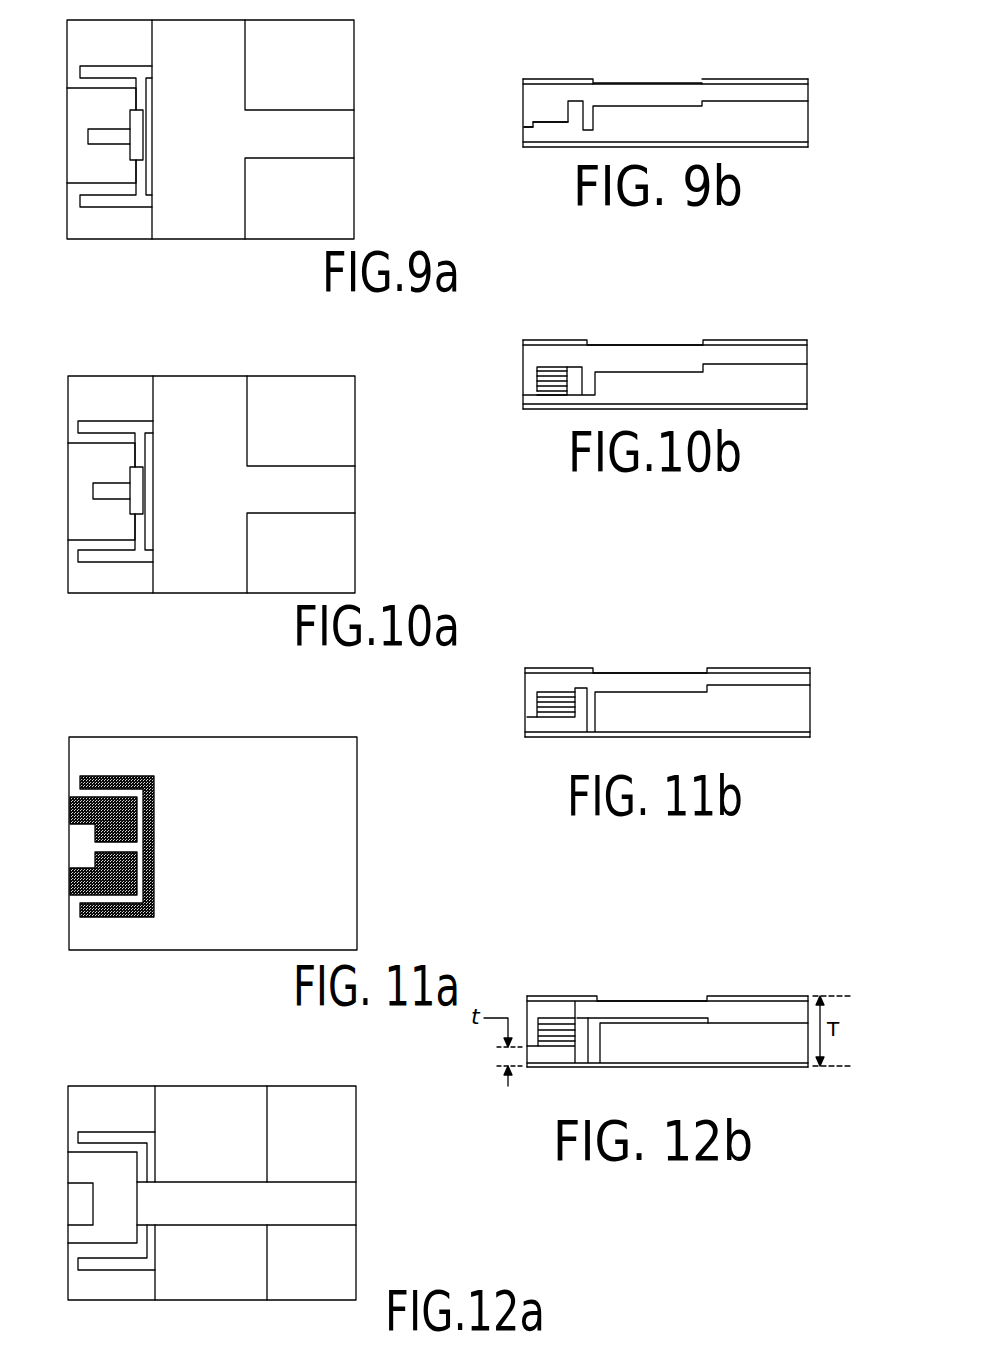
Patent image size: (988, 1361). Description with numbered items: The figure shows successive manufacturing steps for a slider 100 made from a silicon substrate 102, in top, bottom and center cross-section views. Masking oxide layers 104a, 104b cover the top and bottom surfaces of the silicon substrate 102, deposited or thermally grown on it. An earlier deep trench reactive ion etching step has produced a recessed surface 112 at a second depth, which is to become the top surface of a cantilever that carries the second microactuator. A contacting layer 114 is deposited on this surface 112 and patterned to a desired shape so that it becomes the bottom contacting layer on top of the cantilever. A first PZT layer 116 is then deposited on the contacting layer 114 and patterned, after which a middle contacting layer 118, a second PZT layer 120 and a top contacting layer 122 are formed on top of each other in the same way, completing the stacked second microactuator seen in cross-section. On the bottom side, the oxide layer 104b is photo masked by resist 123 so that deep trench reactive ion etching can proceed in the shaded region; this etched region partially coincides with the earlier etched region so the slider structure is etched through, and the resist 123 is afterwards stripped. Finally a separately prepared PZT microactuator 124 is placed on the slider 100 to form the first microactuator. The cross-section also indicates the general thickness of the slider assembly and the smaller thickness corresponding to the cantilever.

In FIG. 9A, the slider 100 is at (368, 78).
In FIG. 9B, the slider 100 is at (770, 71).
In FIG. 10A, the slider 100 is at (366, 411).
In FIG. 10B, the slider 100 is at (778, 331).
In FIG. 11A, the slider 100 is at (372, 752).
In FIG. 11B, the slider 100 is at (824, 678).
In FIG. 12A, the slider 100 is at (369, 1238).
In FIG. 12B, the slider 100 is at (775, 986).
In FIG. 9B, the silicon substrate 102 is at (788, 113).
In FIG. 10B, the silicon substrate 102 is at (783, 377).
In FIG. 11B, the silicon substrate 102 is at (790, 707).
In FIG. 12B, the silicon substrate 102 is at (747, 1047).
In FIG. 9B, the oxide layer 104a is at (571, 79).
In FIG. 10B, the oxide layer 104a is at (665, 342).
In FIG. 11B, the oxide layer 104a is at (784, 668).
In FIG. 12B, the oxide layer 104a is at (542, 996).
In FIG. 9B, the oxide layer 104b is at (752, 147).
In FIG. 11B, the oxide layer 104b is at (740, 737).
In FIG. 12B, the oxide layer 104b is at (647, 1067).
In FIG. 9A, the surface 112 is at (77, 129).
In FIG. 9B, the surface 112 is at (523, 119).
In FIG. 10A, the surface 112 is at (83, 485).
In FIG. 10B, the surface 112 is at (537, 391).
In FIG. 11B, the surface 112 is at (556, 704).
In FIG. 12B, the surface 112 is at (556, 1032).
In FIG. 9A, the contacting layer 114 is at (105, 133).
In FIG. 9B, the contacting layer 114 is at (538, 120).
In FIG. 10B, the contacting layer 114 is at (537, 386).
In FIG. 10A, the first PZT layer 116 is at (110, 483).
In FIG. 10B, the first PZT layer 116 is at (537, 381).
In FIG. 10B, the middle contacting layer 118 is at (537, 376).
In FIG. 10B, the second PZT layer 120 is at (537, 371).
In FIG. 10B, the top contacting layer 122 is at (558, 367).
In FIG. 11A, the resist 123 is at (345, 873).
In FIG. 12A, the PZT microactuator 124 is at (307, 1181).
In FIG. 12B, the PZT microactuator 124 is at (667, 998).